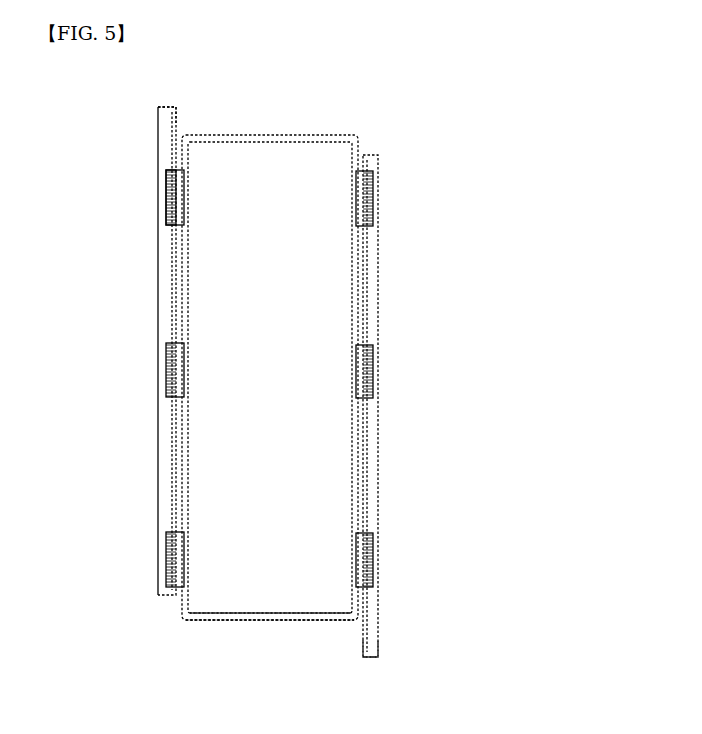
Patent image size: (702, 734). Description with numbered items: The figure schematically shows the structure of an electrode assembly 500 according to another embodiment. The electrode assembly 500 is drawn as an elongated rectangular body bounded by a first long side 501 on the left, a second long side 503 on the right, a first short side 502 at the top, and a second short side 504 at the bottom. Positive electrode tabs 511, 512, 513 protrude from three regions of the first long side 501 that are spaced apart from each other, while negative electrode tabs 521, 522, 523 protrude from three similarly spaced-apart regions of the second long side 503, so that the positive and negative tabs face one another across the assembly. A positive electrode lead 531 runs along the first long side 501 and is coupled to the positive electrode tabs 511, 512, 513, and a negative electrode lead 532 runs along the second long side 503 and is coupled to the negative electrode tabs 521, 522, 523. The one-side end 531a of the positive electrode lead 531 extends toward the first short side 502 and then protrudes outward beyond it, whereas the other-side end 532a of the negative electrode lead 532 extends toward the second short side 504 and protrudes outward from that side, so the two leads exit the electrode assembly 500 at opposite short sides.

The electrode assembly 500 is at (108, 118).
The first long side 501 is at (128, 361).
The first short side 502 is at (312, 118).
The second long side 503 is at (409, 415).
The second short side 504 is at (266, 637).
The positive electrode tab 511 is at (168, 200).
The positive electrode tab 512 is at (182, 373).
The positive electrode tab 513 is at (170, 558).
The negative electrode tab 521 is at (362, 203).
The negative electrode tab 522 is at (362, 372).
The negative electrode tab 523 is at (362, 560).
The positive electrode lead 531 is at (168, 280).
The one-side end of positive electrode lead 531a is at (167, 131).
The negative electrode lead 532 is at (375, 278).
The other-side end of negative electrode lead 532a is at (370, 645).